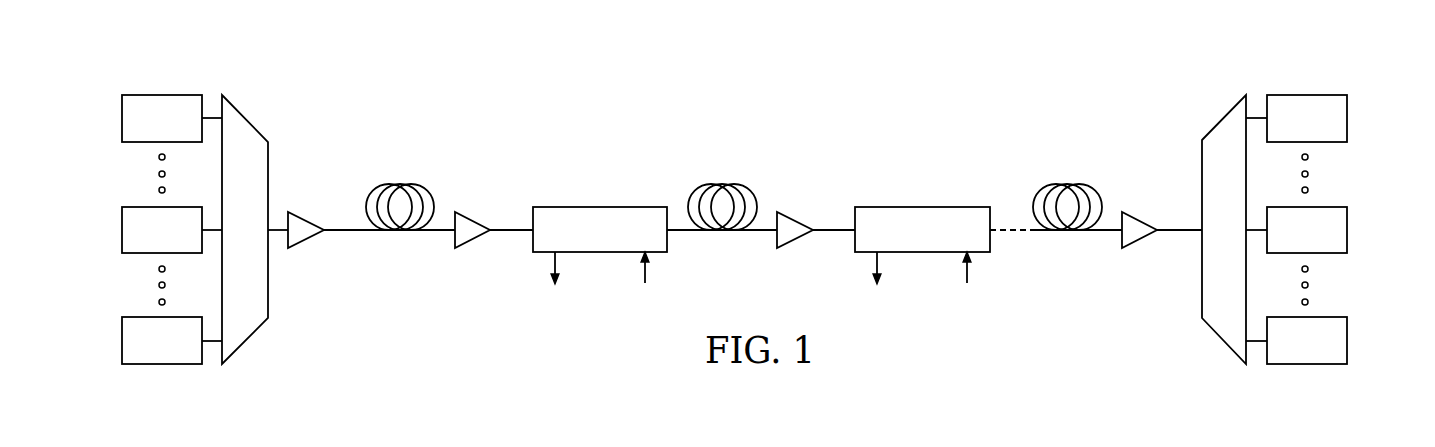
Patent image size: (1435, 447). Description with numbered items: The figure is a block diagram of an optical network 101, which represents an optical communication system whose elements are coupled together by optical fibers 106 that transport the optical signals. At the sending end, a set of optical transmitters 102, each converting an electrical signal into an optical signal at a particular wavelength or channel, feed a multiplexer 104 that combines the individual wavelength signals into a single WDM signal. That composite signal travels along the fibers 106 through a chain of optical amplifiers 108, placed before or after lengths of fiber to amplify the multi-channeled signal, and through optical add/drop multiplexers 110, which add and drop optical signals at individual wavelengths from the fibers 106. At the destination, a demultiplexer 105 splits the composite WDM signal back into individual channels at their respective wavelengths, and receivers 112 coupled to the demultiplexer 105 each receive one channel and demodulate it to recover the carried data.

The optical network 101 is at (603, 70).
The transmitter 102 is at (122, 100).
The multiplexer 104 is at (248, 120).
The demultiplexer 105 is at (1223, 113).
The optical fiber 106 is at (402, 183).
The optical amplifier 108 is at (309, 216).
The optical add/drop multiplexer 110 is at (600, 205).
The receiver 112 is at (1347, 105).